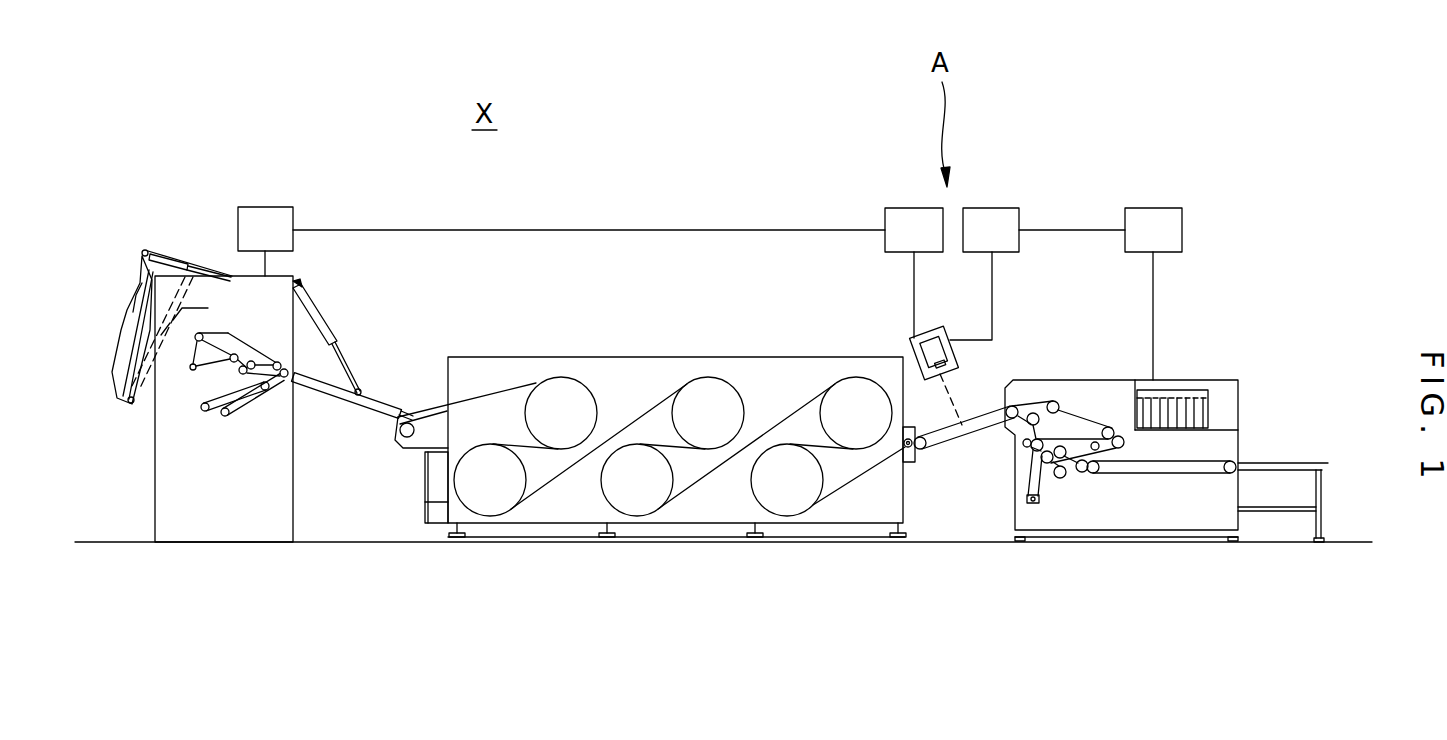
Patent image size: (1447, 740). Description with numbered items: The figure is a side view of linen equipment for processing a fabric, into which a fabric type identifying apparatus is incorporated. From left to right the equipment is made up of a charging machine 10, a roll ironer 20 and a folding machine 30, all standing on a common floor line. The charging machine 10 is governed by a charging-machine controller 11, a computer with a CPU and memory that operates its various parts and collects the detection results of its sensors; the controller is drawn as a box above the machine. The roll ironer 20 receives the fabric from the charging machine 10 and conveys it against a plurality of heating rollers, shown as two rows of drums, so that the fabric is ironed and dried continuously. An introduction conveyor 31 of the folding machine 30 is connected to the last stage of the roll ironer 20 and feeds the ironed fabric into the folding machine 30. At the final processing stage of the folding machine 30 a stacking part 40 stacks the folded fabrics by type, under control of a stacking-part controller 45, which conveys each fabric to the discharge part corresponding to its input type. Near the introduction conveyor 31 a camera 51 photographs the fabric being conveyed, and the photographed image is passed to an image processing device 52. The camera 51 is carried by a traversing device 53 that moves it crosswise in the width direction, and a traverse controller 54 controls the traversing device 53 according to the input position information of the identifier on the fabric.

The charging machine 10 is at (213, 542).
The charging-machine controller 11 is at (561, 241).
The roll ironer 20 is at (680, 542).
The folding machine 30 is at (1115, 542).
The introduction conveyor 31 is at (963, 458).
The stacking part 40 is at (1223, 380).
The stacking-part controller 45 is at (1100, 294).
The camera 51 is at (957, 350).
The image processing device 52 is at (984, 274).
The traversing device 53 is at (910, 350).
The traverse controller 54 is at (914, 273).